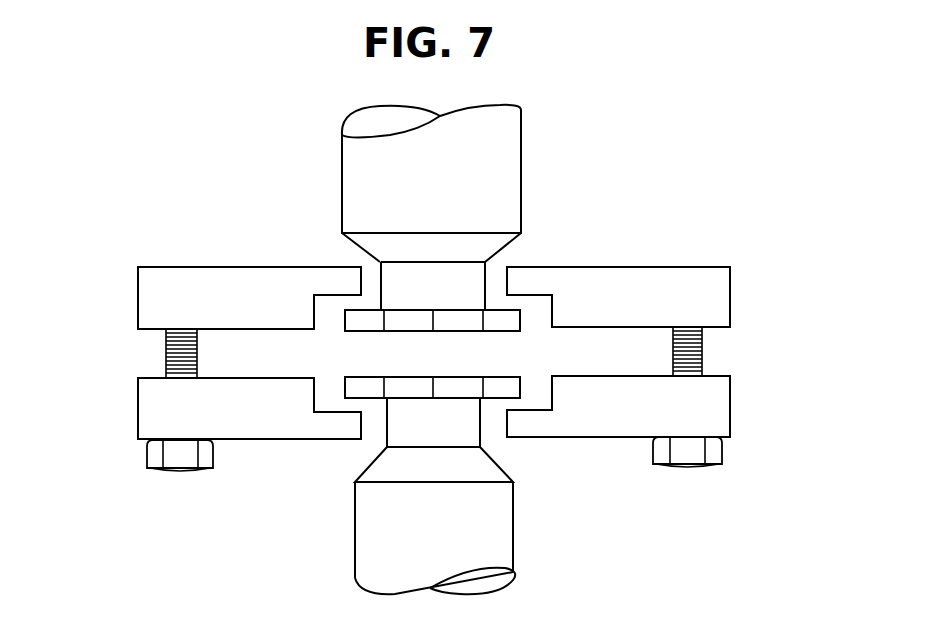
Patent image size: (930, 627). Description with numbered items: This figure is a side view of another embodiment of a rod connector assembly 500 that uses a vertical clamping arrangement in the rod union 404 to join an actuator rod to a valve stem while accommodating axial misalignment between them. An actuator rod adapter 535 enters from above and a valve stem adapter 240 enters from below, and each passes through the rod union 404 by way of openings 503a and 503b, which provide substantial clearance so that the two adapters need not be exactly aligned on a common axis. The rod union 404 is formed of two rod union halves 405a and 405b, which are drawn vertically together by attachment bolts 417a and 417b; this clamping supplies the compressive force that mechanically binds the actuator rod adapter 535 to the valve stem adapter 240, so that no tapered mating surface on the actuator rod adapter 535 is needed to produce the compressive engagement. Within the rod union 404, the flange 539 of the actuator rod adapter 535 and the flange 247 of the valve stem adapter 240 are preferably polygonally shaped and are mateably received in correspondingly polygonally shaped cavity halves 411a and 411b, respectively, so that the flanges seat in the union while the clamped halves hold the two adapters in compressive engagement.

The rod connector assembly 500 is at (173, 163).
The actuator rod adapter 535 is at (522, 172).
The opening 503a is at (492, 282).
The rod union 404 is at (137, 306).
The rod union half 405b is at (730, 293).
The rod union half 405a is at (730, 409).
The flange 539 is at (345, 329).
The flange 247 is at (345, 388).
The cavity half 411a is at (546, 304).
The cavity half 411b is at (546, 402).
The opening 503b is at (494, 446).
The valve stem adapter 240 is at (513, 530).
The attachment bolt 417a is at (178, 472).
The attachment bolt 417b is at (687, 468).